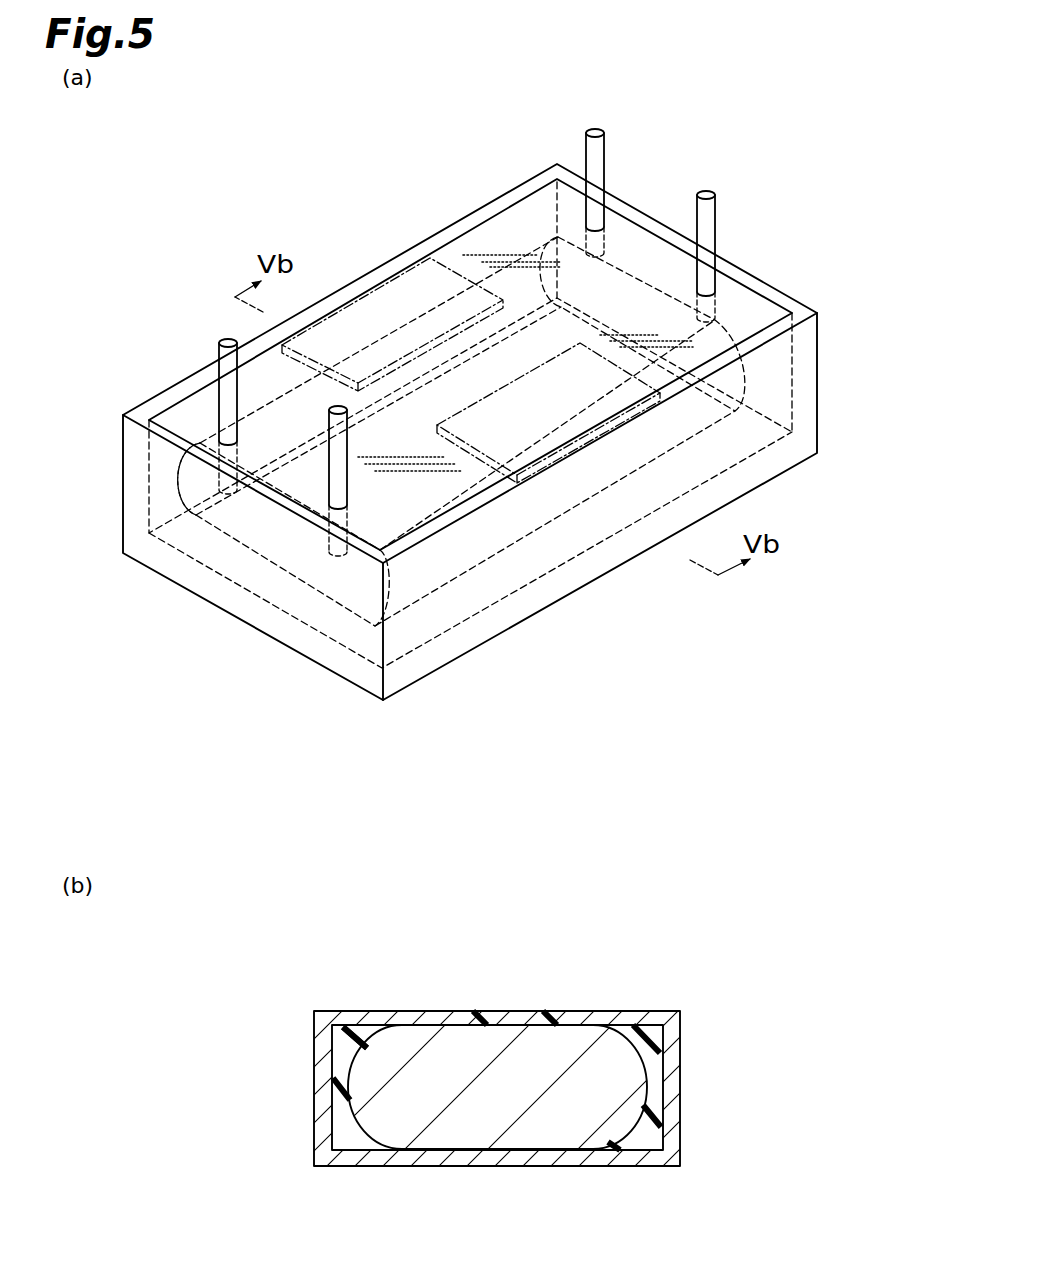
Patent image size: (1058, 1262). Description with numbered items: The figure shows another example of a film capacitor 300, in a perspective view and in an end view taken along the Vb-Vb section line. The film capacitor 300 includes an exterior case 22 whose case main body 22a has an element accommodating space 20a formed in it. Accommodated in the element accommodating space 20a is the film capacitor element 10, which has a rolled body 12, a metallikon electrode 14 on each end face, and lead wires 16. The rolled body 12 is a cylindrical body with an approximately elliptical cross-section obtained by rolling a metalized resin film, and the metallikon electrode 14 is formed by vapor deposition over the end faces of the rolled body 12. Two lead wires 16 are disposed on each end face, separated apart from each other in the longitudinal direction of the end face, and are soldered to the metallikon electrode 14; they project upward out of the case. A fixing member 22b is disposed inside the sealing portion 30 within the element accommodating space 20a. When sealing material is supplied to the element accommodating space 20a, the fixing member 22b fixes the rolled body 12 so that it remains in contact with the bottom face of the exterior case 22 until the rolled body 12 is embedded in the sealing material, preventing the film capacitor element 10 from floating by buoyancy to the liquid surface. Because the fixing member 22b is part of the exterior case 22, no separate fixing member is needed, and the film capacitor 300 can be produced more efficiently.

The film capacitor 300 is at (852, 108).
The exterior case 22 is at (529, 631).
The case main body 22a is at (818, 373).
The fixing member 22b is at (366, 322).
The sealing portion 30 is at (503, 245).
The element accommodating space 20a is at (360, 1047).
The film capacitor element 10 is at (529, 631).
The rolled body 12 is at (567, 490).
The metallikon electrode 14 is at (275, 560).
The lead wire 16 is at (513, 672).